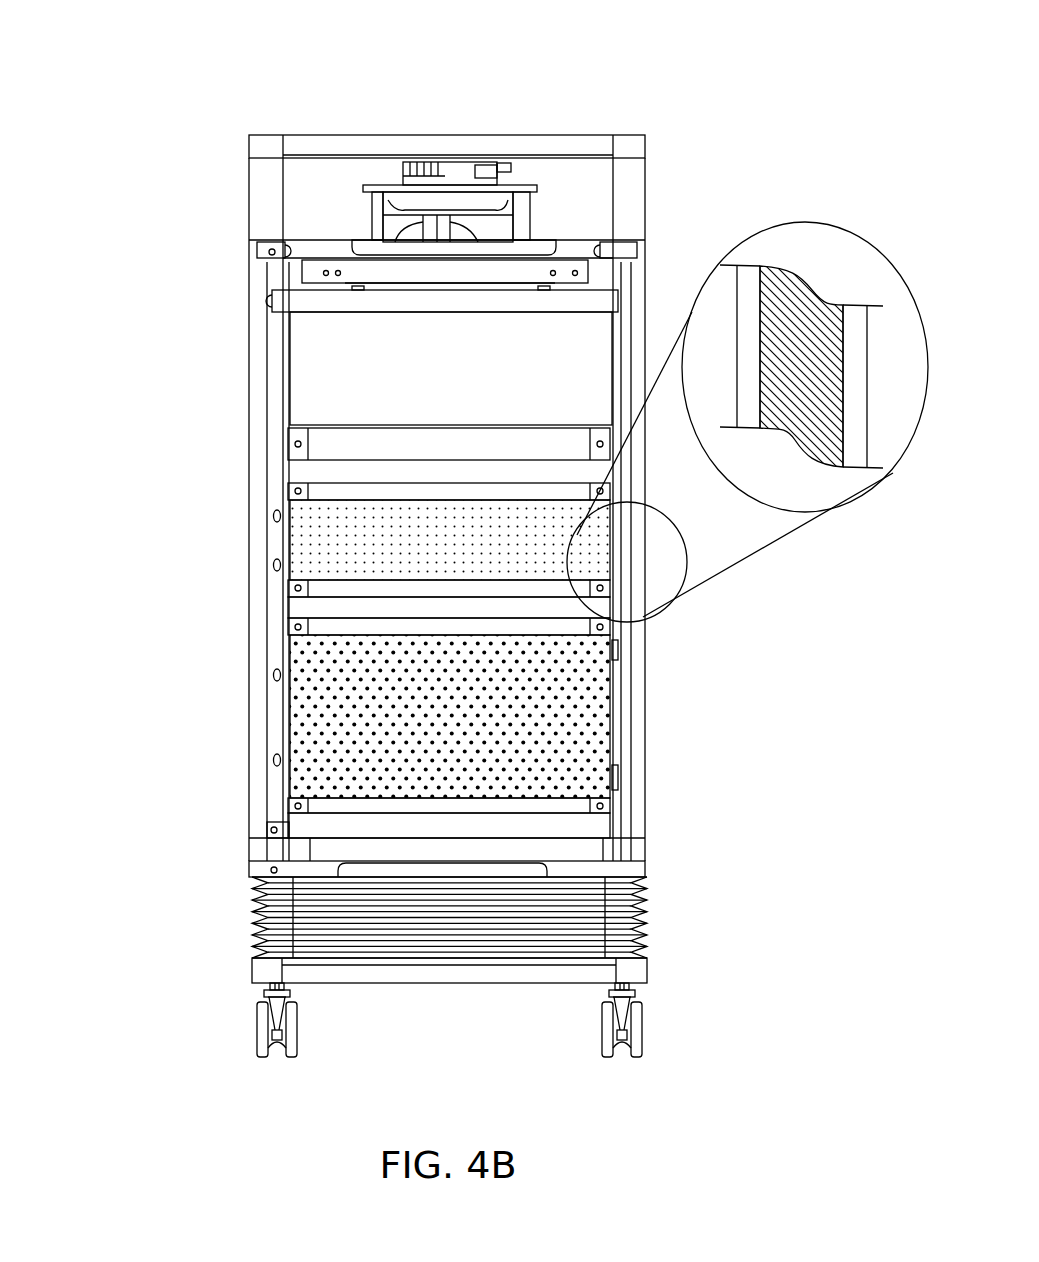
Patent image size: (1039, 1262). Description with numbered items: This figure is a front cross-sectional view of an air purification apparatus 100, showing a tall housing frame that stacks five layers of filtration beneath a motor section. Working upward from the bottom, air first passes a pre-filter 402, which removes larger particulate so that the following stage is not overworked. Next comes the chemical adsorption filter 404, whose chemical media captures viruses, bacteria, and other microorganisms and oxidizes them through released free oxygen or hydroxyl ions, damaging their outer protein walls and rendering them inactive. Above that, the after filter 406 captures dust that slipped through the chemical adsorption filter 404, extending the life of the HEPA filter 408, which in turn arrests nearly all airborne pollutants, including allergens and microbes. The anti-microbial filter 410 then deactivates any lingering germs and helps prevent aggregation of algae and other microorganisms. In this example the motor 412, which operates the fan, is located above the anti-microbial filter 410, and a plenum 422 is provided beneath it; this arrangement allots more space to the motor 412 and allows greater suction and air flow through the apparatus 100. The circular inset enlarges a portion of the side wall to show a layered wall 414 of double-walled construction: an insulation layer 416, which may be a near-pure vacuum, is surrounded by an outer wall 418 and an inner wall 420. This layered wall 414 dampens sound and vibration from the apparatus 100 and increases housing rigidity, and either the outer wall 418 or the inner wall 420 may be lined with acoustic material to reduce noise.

The apparatus 100 is at (182, 84).
The pre-filter 402 is at (312, 820).
The chemical adsorption filter 404 is at (325, 718).
The after filter 406 is at (305, 606).
The HEPA filter 408 is at (307, 545).
The anti-microbial filter 410 is at (328, 441).
The motor 412 is at (415, 228).
The layered wall 414 is at (838, 256).
The insulation layer 416 is at (812, 428).
The outer wall 418 is at (853, 457).
The inner wall 420 is at (753, 287).
The plenum 422 is at (335, 357).